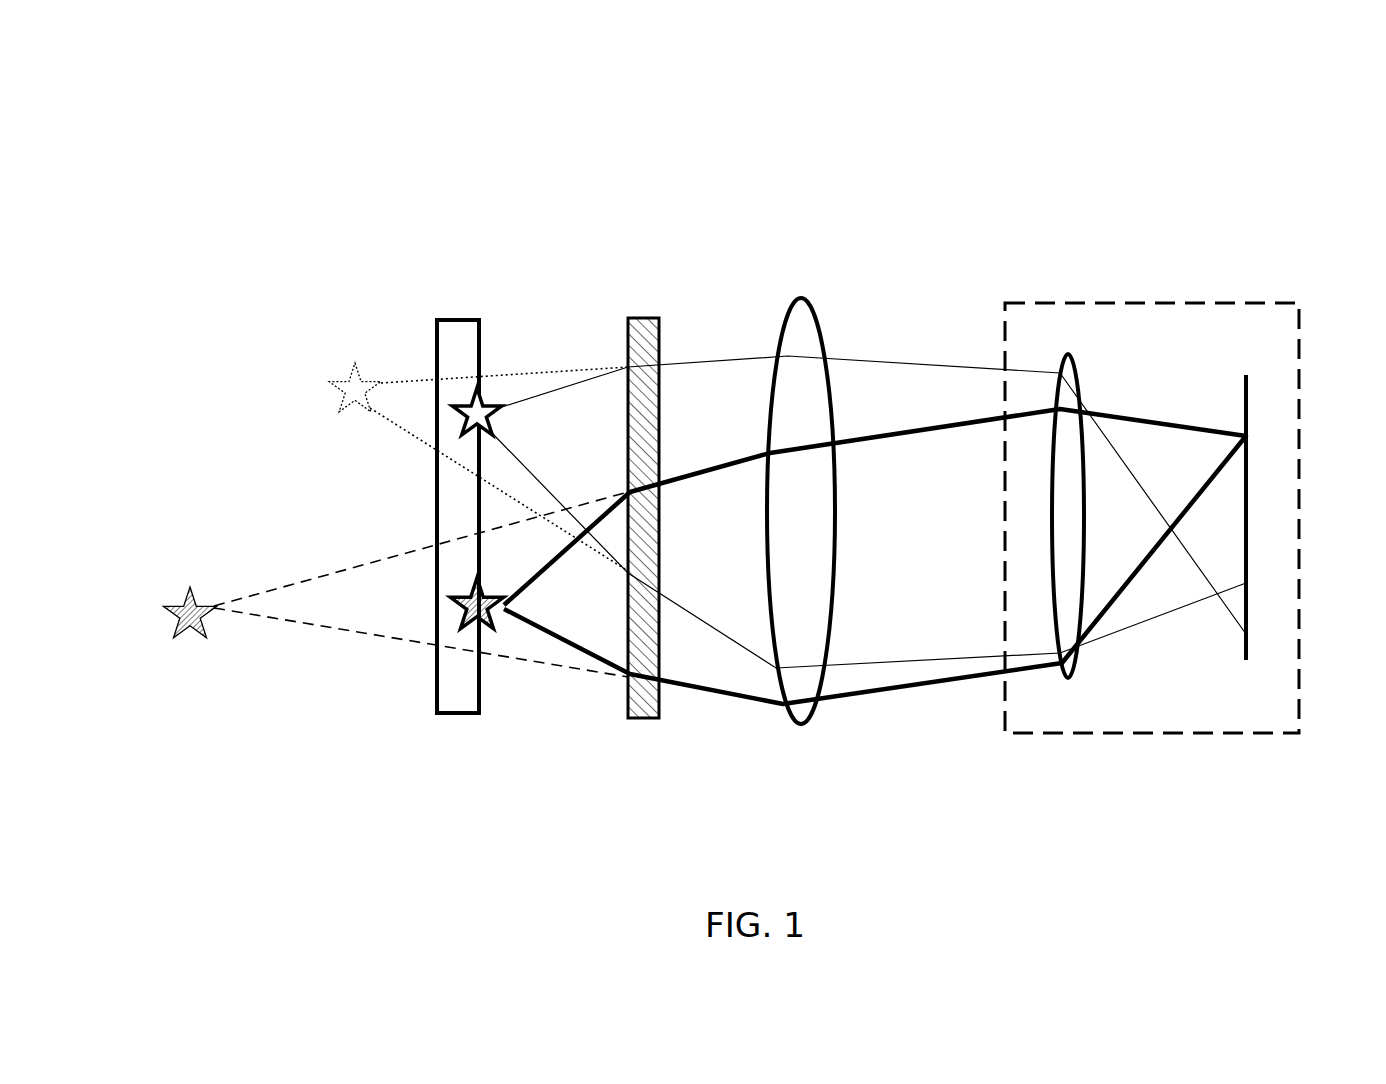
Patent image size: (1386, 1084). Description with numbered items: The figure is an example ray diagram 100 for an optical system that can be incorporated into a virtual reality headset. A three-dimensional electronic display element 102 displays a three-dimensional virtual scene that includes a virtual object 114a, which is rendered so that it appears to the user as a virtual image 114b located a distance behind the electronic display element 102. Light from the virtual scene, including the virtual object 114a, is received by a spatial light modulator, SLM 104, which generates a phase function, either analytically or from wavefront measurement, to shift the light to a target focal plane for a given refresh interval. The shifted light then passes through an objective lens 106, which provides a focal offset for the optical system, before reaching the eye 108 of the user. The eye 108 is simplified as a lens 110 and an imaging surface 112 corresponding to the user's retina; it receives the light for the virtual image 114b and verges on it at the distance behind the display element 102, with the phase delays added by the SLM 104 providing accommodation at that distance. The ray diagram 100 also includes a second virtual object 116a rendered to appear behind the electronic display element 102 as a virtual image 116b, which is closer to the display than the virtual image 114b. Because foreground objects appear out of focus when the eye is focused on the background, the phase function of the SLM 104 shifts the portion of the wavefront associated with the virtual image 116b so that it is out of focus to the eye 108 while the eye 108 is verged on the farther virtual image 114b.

The ray diagram 100 is at (187, 151).
The 3D electronic display element 102 is at (436, 331).
The spatial light modulator (SLM) 104 is at (627, 332).
The objective lens 106 is at (782, 333).
The eye 108 is at (1267, 263).
The lens 110 is at (1067, 355).
The imaging surface 112 is at (1247, 400).
The virtual object 114a is at (473, 625).
The virtual image 114b is at (180, 614).
The virtual object 116a is at (471, 433).
The virtual image 116b is at (340, 415).